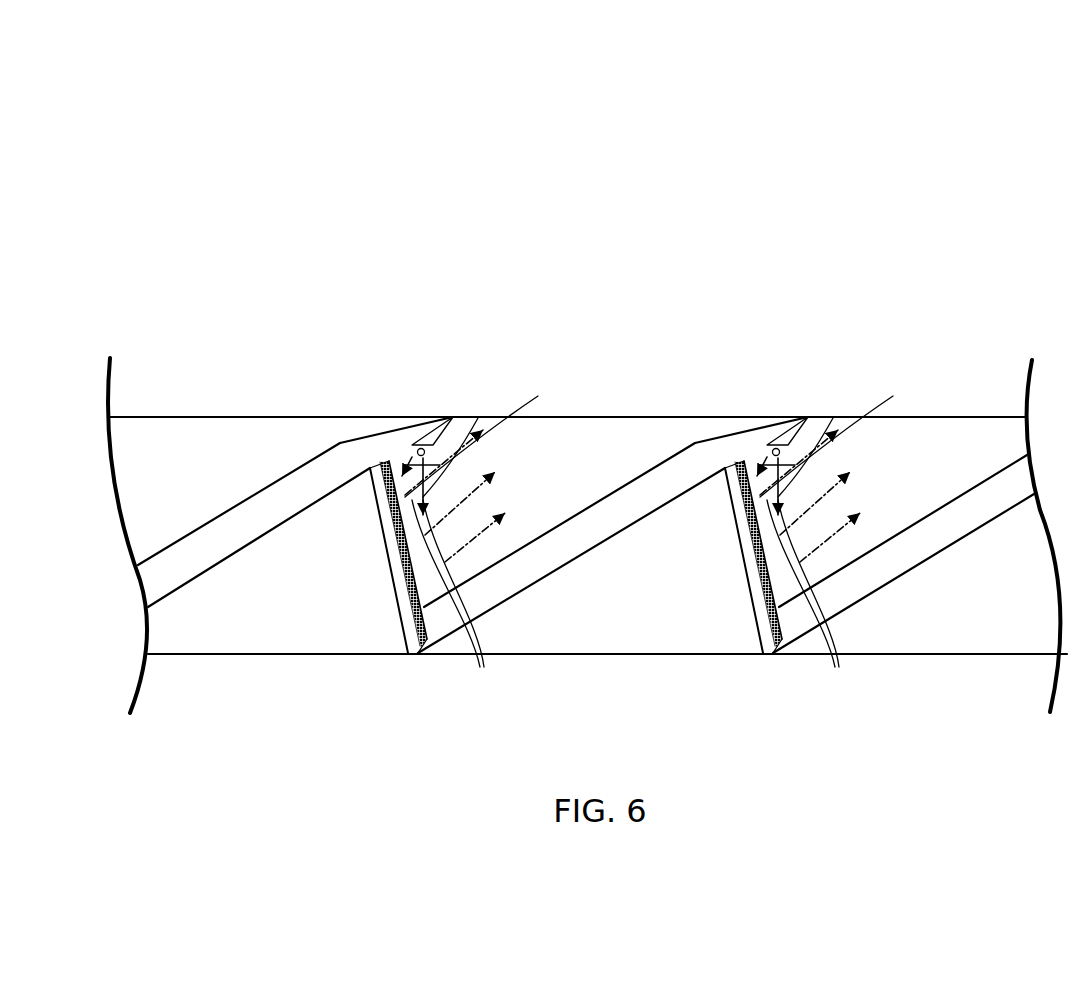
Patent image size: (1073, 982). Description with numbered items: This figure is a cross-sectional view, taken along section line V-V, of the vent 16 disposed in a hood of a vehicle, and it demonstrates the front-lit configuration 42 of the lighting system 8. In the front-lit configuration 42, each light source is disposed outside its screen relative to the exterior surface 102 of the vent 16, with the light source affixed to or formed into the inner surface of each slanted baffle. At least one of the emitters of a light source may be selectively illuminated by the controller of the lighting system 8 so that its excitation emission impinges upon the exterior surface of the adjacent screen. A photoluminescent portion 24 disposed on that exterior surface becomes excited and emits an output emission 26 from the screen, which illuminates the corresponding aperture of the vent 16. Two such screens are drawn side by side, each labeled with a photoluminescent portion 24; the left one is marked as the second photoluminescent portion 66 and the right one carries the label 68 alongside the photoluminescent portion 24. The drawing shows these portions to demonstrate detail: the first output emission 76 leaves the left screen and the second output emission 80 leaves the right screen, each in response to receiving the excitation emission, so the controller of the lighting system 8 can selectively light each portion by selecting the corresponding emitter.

The lighting system 8 is at (912, 120).
The front-lit configuration 42 is at (962, 236).
The vent 16 is at (254, 358).
The exterior surface 102 is at (332, 417).
The second photoluminescent portion 66 is at (333, 582).
The photoluminescent portion 24 is at (392, 544).
The second stripe 68 is at (688, 582).
The output emission 26 is at (462, 570).
The first output emission 76 is at (462, 570).
The second output emission 80 is at (818, 570).